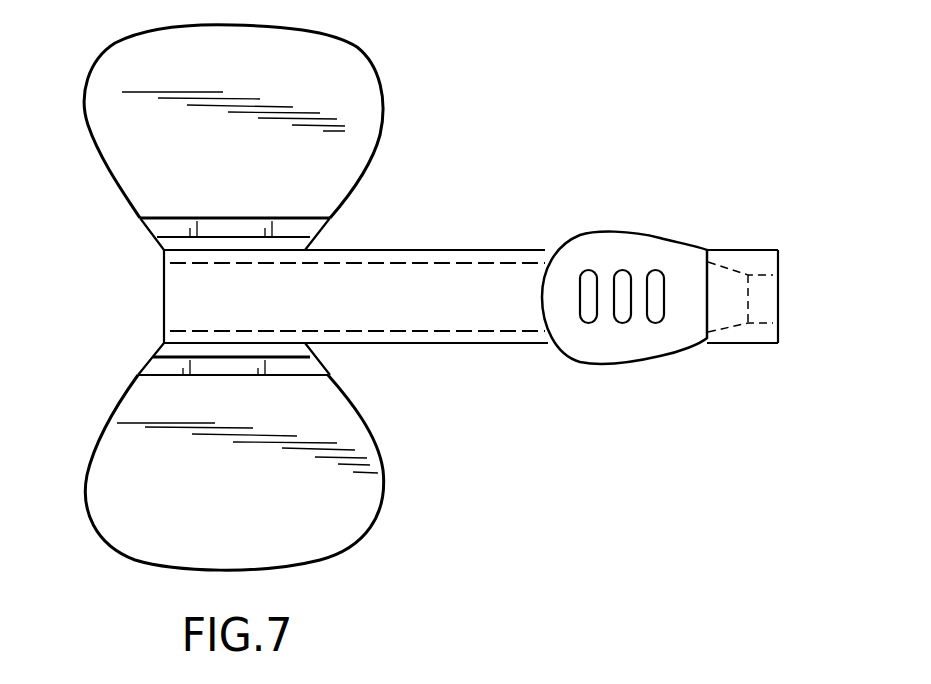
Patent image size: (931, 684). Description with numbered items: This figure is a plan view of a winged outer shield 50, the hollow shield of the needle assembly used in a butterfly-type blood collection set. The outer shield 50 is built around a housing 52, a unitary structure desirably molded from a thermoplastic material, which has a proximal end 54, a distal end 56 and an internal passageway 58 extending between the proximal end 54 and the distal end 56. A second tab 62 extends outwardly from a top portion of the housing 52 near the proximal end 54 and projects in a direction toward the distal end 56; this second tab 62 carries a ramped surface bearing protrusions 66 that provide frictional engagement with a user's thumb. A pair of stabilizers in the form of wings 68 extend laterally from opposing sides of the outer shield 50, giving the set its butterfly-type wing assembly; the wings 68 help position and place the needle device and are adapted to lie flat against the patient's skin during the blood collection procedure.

The outer shield 50 is at (419, 297).
The housing 52 is at (421, 275).
The proximal end 54 is at (785, 247).
The distal end 56 is at (155, 262).
The internal passageway 58 is at (187, 307).
The second tab 62 is at (624, 302).
The protrusions 66 is at (590, 322).
The wings 68 is at (100, 77).